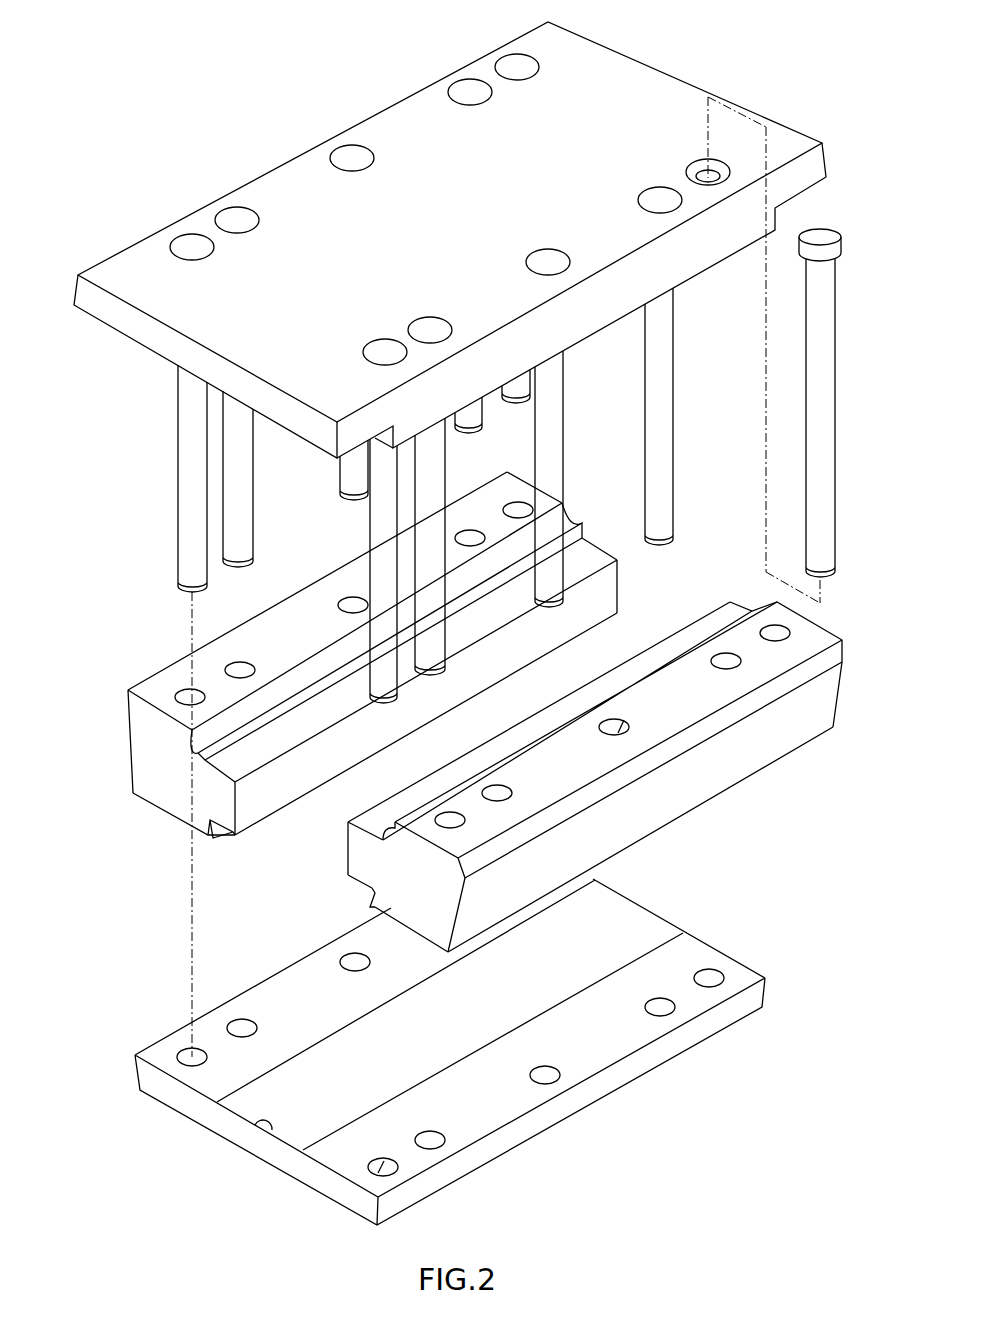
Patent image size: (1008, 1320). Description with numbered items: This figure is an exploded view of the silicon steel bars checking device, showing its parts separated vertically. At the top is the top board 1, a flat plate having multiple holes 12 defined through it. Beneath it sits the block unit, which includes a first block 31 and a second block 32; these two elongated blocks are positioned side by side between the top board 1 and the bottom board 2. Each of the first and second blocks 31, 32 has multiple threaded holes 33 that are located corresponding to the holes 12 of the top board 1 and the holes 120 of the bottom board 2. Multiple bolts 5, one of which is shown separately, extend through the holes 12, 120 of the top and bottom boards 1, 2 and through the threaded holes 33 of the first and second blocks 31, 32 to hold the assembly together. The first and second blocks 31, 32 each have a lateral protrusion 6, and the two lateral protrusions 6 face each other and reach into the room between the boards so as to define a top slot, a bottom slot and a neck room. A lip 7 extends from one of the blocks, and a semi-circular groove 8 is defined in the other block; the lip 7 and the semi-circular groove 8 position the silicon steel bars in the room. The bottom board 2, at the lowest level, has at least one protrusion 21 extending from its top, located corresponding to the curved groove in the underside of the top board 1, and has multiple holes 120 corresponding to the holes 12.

The top board 1 is at (455, 312).
The holes 12 is at (716, 176).
The bolts 5 is at (820, 378).
The threaded holes 33 is at (616, 727).
The lip 7 is at (160, 738).
The first block 31 is at (336, 653).
The lateral protrusion 6 is at (212, 832).
The semi-circular groove 8 is at (389, 838).
The second block 32 is at (576, 777).
The bottom board 2 is at (435, 913).
The protrusion 21 is at (258, 1118).
The holes 120 is at (375, 1167).